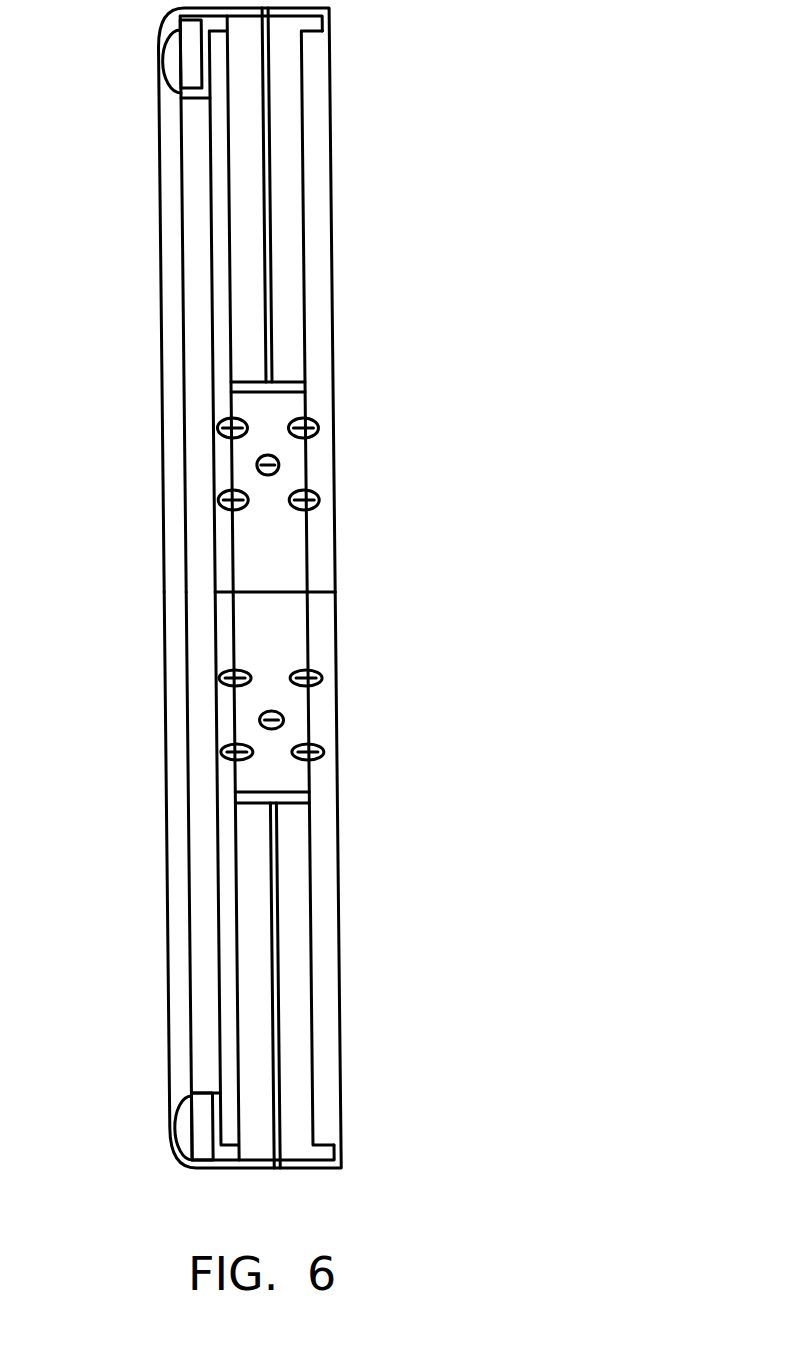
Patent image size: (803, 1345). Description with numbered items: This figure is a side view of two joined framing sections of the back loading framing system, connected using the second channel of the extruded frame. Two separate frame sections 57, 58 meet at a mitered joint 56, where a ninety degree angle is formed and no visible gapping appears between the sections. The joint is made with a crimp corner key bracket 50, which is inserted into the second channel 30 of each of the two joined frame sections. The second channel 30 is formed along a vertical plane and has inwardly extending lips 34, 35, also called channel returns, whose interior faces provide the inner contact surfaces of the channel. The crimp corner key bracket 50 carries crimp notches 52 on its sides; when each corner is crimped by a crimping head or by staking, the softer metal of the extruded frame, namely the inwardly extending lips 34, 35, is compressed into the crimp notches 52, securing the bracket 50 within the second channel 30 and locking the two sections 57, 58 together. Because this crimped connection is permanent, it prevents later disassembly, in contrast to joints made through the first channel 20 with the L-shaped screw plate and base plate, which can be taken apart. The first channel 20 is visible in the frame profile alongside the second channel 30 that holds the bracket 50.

The first channel 20 is at (200, 1132).
The second channel 30 is at (293, 1135).
The inwardly extending lip 34 is at (317, 315).
The inwardly extending lip 35 is at (220, 252).
The crimp corner key bracket 50 is at (283, 453).
The crimp notches 52 is at (320, 502).
The mitered joint 56 is at (215, 580).
The frame section 57 is at (160, 300).
The frame section 58 is at (167, 860).